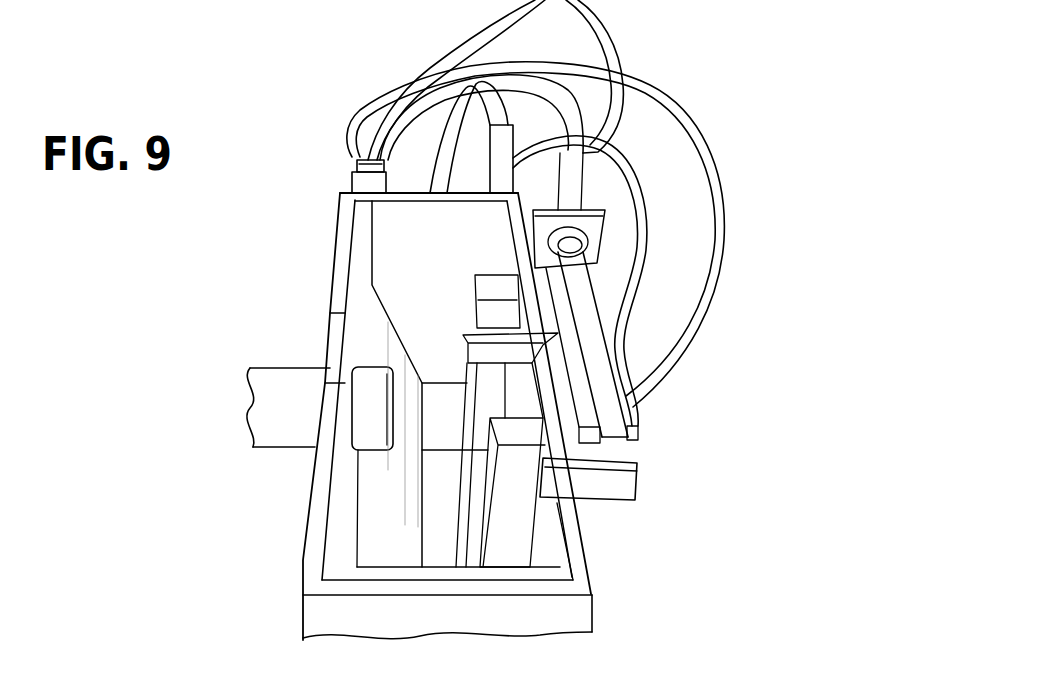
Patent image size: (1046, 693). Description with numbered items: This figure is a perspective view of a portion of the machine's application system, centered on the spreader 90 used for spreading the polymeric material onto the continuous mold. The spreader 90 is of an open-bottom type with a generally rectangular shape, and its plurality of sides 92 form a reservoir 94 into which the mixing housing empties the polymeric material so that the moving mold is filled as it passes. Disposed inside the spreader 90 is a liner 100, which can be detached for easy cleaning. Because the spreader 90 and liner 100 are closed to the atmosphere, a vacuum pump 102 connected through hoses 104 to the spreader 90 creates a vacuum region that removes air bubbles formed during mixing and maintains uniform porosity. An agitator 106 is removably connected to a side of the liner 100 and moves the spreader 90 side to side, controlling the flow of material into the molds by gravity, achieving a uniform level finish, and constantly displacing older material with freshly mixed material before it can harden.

The spreader 90 is at (298, 553).
The sides 92 is at (316, 613).
The reservoir 94 is at (358, 544).
The liner 100 is at (487, 572).
The vacuum pump 102 is at (513, 184).
The hoses 104 is at (612, 44).
The agitator 106 is at (655, 423).